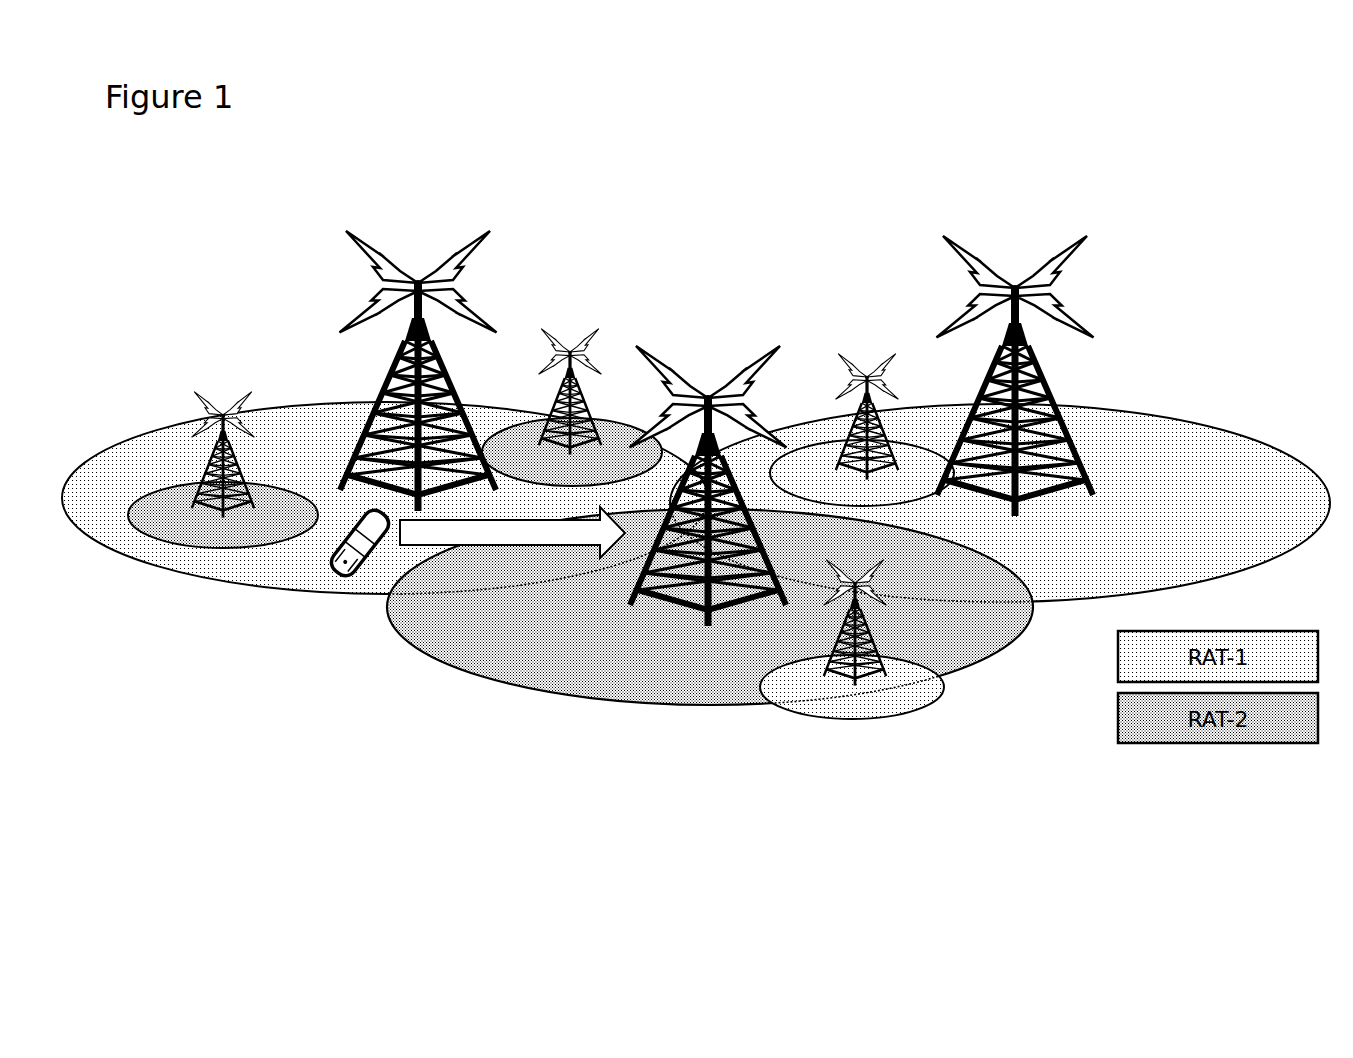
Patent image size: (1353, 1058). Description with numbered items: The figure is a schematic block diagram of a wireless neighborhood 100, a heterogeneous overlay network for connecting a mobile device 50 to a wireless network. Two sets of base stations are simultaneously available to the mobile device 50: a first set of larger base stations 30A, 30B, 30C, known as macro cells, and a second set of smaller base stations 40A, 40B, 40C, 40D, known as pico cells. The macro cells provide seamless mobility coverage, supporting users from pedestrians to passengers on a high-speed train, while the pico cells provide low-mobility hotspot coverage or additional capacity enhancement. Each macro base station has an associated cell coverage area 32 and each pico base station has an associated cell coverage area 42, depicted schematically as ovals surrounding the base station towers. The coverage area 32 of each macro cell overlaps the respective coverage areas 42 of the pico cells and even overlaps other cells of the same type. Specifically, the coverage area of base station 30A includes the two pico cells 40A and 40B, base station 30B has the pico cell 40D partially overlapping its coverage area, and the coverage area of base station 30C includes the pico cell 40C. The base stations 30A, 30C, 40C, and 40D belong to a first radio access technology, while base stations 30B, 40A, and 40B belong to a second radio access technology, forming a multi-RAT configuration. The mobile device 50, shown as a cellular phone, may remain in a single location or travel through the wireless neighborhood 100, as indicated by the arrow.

The wireless neighborhood 100 is at (648, 128).
The base station 30A is at (420, 247).
The base station 30B is at (709, 322).
The base station 30C is at (1014, 228).
The cell coverage area 32 is at (1142, 448).
The base station 40A is at (222, 386).
The base station 40B is at (571, 333).
The base station 40C is at (866, 362).
The base station 40D is at (902, 618).
The cell coverage area 42 is at (180, 532).
The mobile device 50 is at (328, 542).